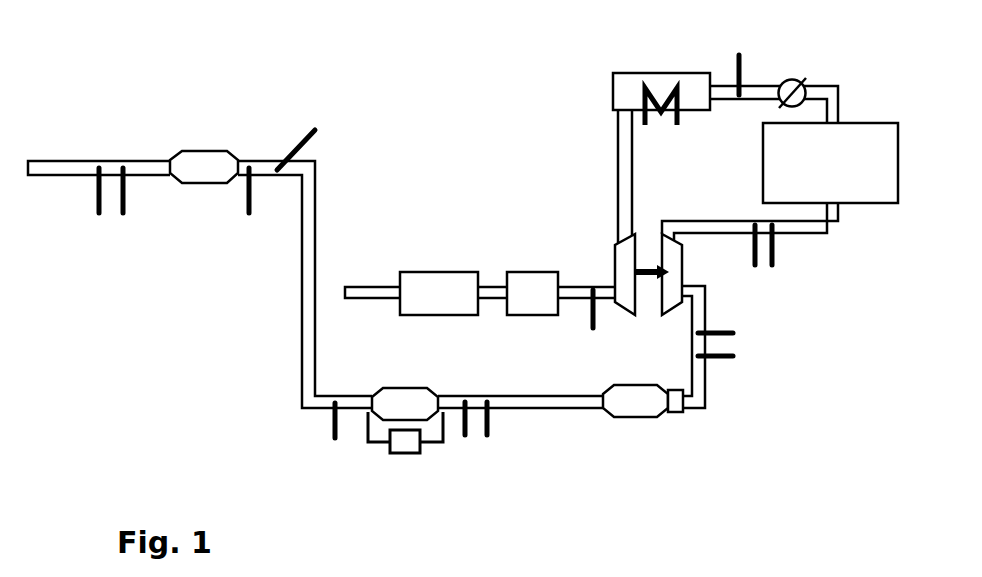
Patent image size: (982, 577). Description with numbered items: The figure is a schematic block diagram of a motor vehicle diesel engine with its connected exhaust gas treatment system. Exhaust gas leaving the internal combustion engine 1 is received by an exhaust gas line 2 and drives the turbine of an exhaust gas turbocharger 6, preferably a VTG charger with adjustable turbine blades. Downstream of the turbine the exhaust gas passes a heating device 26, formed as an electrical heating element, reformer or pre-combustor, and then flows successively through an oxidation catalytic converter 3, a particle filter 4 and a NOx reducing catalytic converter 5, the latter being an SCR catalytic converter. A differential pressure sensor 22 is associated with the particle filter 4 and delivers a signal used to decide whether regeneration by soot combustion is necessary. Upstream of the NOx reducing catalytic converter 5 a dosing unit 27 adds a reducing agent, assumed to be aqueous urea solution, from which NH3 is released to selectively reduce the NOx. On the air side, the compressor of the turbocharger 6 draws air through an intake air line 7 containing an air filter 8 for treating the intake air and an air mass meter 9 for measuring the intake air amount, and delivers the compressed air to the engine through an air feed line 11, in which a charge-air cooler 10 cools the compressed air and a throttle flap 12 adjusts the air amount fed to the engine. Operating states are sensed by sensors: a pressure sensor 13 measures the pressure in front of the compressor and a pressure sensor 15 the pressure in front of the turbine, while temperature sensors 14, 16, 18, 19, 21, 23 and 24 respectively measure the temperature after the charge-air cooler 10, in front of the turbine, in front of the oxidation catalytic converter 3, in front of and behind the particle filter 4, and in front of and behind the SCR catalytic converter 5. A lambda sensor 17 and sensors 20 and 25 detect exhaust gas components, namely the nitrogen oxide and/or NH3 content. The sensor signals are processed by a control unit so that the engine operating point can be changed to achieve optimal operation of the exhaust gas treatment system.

The internal combustion engine 1 is at (826, 174).
The exhaust gas line 2 is at (305, 333).
The oxidation catalytic converter 3 is at (641, 407).
The particle filter 4 is at (411, 412).
The NOx reducing catalytic converter 5 is at (210, 172).
The exhaust gas turbocharger 6 is at (587, 240).
The intake air line 7 is at (377, 287).
The air filter 8 is at (445, 299).
The air mass meter 9 is at (538, 299).
The charge-air cooler 10 is at (612, 102).
The air feed line 11 is at (617, 158).
The throttle flap 12 is at (800, 75).
The pressure sensor 13 is at (593, 320).
The temperature sensor 14 is at (733, 70).
The pressure sensor 15 is at (755, 265).
The temperature sensor 16 is at (774, 250).
The lambda sensor 17 is at (733, 335).
The temperature sensor 18 is at (727, 362).
The temperature sensor 19 is at (488, 425).
The sensor 20 is at (466, 435).
The temperature sensor 21 is at (333, 428).
The differential pressure sensor 22 is at (413, 445).
The temperature sensor 23 is at (249, 213).
The temperature sensor 24 is at (123, 203).
The sensor 25 is at (99, 213).
The heating device 26 is at (678, 413).
The dosing unit 27 is at (318, 127).